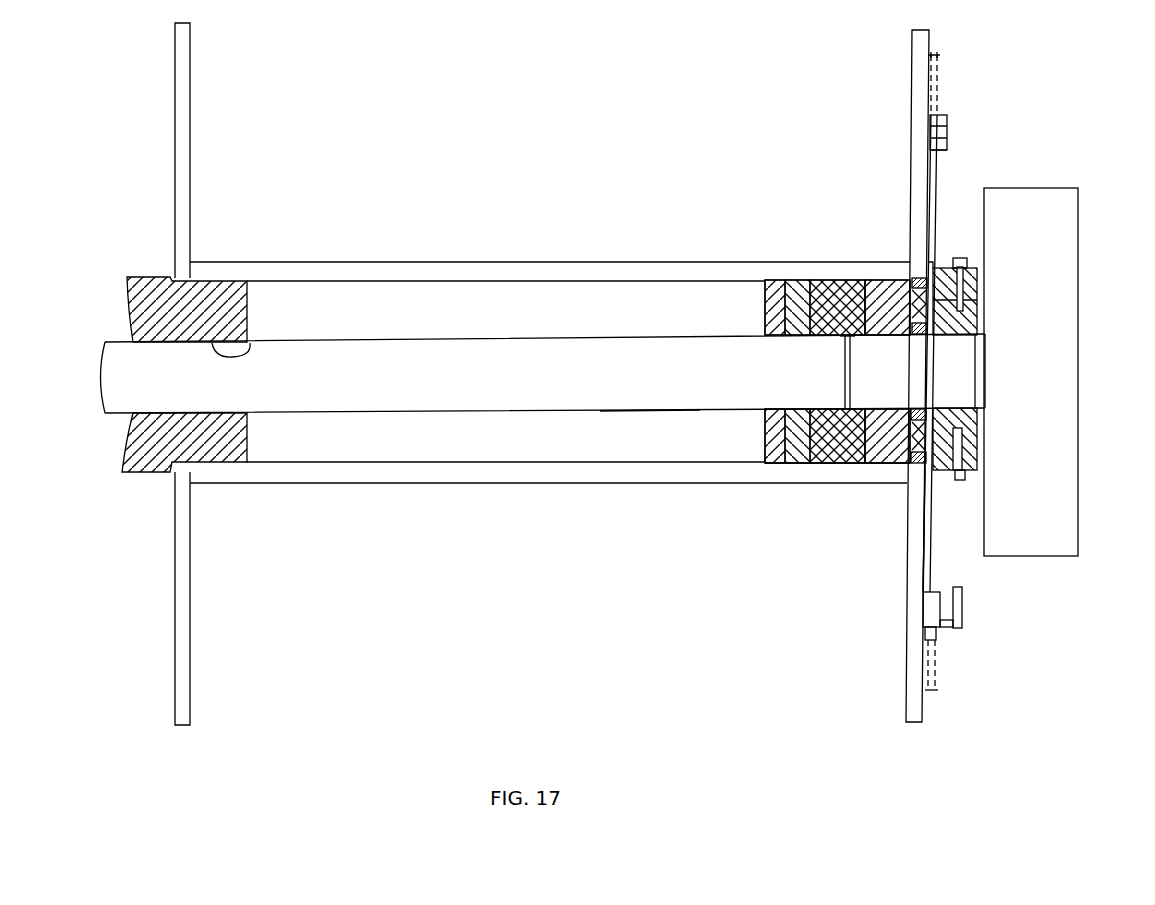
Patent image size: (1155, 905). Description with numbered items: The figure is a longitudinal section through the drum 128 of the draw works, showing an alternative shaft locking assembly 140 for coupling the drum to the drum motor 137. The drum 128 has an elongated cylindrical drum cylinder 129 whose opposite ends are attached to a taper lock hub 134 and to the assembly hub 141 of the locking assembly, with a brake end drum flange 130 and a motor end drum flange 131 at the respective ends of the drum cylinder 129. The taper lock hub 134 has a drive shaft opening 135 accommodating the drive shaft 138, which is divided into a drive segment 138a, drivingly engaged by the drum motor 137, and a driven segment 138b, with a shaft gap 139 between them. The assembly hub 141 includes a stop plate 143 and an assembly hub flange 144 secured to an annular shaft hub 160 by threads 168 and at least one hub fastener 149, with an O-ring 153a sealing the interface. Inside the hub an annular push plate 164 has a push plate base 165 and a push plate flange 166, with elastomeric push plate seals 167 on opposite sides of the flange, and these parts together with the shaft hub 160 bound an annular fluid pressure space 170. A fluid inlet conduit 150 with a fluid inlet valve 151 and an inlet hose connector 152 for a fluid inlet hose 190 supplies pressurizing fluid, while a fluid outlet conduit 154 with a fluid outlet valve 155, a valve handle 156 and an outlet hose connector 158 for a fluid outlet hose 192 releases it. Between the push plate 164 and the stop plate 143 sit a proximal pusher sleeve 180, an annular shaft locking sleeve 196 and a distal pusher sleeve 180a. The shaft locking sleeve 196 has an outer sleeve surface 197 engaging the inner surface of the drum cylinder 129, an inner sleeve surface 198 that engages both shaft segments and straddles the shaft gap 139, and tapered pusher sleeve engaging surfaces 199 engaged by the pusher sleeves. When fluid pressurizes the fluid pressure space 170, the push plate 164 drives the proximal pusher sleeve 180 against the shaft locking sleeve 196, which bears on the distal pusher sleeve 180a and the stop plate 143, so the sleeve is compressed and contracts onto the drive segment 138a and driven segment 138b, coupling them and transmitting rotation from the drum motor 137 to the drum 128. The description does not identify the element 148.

The drum 128 is at (170, 39).
The drum cylinder 129 is at (353, 272).
The brake end drum flange 130 is at (181, 186).
The motor end drum flange 131 is at (912, 130).
The taper lock hub 134 is at (145, 278).
The drive shaft opening 135 is at (248, 345).
The drum motor 137 is at (1080, 300).
The drive shaft 138 is at (672, 388).
The drive segment 138a is at (972, 400).
The driven segment 138b is at (675, 400).
The shaft gap 139 is at (855, 375).
The shaft locking assembly 140 is at (1014, 103).
The assembly hub 141 is at (758, 320).
The stop plate 143 is at (765, 295).
The assembly hub flange 144 is at (977, 275).
The flange plate 148 is at (977, 300).
The hub fastener 149 is at (960, 270).
The fluid inlet conduit 150 is at (945, 160).
The fluid inlet valve 151 is at (940, 125).
The inlet hose connector 152 is at (938, 110).
The O-ring 153a is at (963, 262).
The fluid outlet conduit 154 is at (930, 545).
The fluid outlet valve 155 is at (940, 592).
The valve handle 156 is at (958, 600).
The outlet hose connector 158 is at (935, 632).
The shaft hub 160 is at (975, 322).
The push plate 164 is at (900, 462).
The push plate base 165 is at (890, 330).
The push plate flange 166 is at (930, 325).
The push plate seals 167 is at (913, 410).
The threads 168 is at (950, 448).
The fluid pressure space 170 is at (938, 262).
The proximal pusher sleeve 180 is at (878, 272).
The distal pusher sleeve 180a is at (798, 272).
The fluid inlet hose 190 is at (935, 55).
The fluid outlet hose 192 is at (935, 665).
The shaft locking sleeve 196 is at (838, 272).
The outer sleeve surface 197 is at (855, 272).
The inner sleeve surface 198 is at (845, 338).
The pusher sleeve engaging surfaces 199 is at (800, 462).